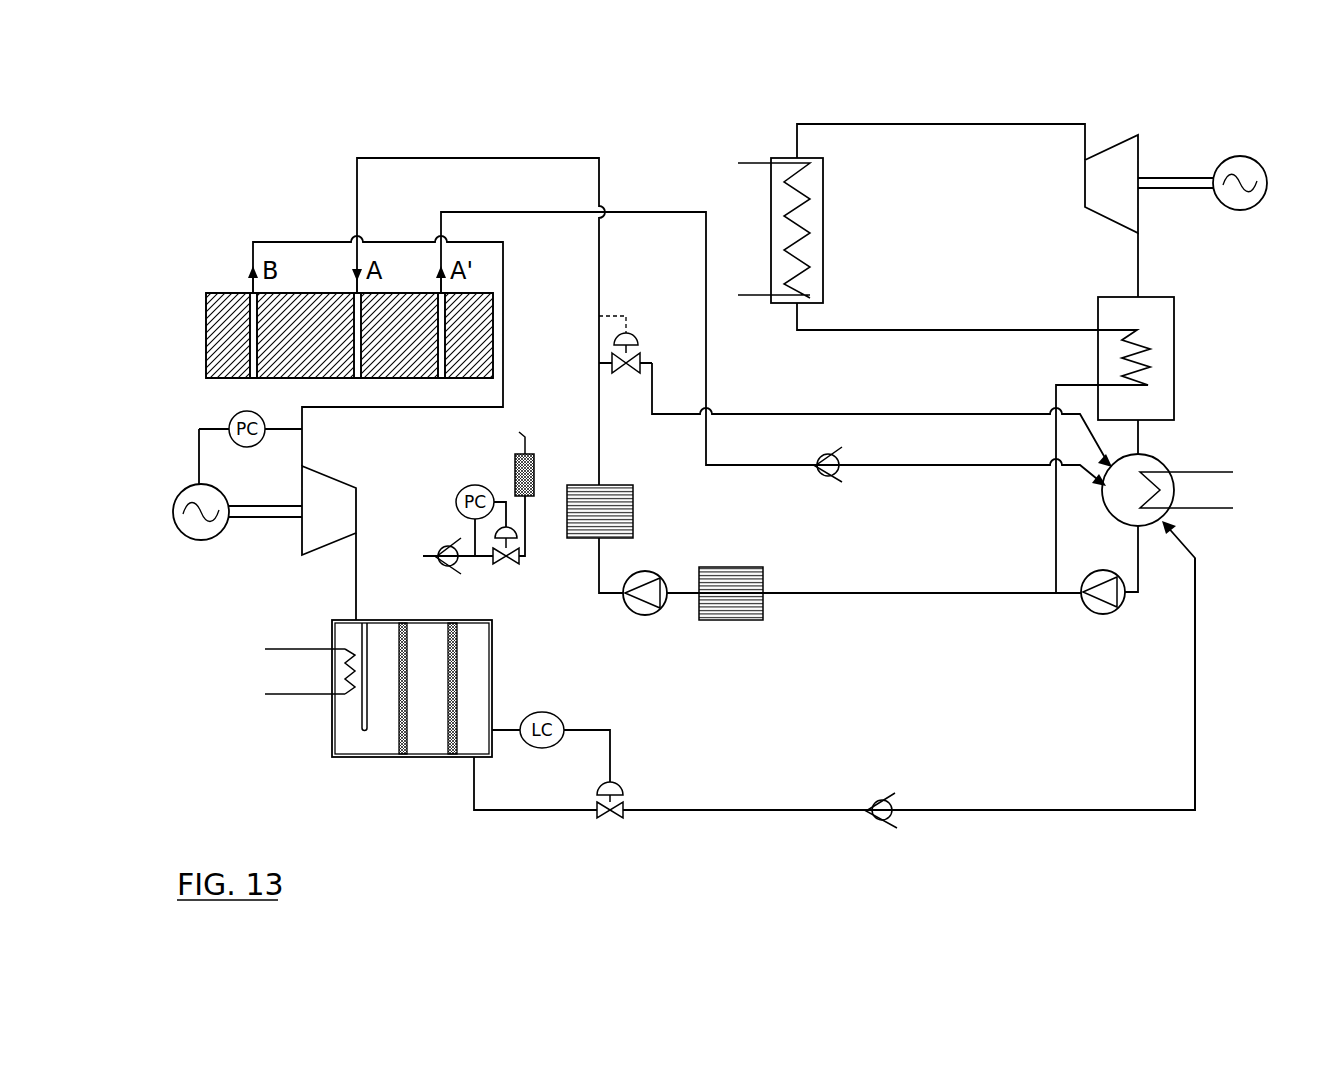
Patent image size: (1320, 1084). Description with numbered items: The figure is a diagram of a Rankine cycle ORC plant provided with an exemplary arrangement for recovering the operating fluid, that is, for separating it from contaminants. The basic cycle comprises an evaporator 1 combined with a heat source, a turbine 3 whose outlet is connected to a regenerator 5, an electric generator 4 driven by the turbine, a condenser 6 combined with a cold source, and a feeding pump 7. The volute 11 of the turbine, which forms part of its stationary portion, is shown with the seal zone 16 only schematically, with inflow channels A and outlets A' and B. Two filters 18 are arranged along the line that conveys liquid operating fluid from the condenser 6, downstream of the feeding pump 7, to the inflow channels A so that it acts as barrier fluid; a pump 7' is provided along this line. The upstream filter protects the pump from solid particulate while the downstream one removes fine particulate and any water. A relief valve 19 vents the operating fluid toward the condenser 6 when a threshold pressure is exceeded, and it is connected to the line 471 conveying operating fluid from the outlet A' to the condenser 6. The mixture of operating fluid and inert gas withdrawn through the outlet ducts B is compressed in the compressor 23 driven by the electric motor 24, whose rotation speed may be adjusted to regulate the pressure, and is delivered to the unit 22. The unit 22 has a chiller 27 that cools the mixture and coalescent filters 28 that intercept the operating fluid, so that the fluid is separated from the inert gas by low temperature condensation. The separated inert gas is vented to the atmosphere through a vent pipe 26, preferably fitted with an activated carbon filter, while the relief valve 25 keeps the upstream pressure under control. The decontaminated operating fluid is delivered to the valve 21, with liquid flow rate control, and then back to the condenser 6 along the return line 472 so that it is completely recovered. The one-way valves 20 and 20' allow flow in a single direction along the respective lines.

The evaporator 1 is at (775, 158).
The turbine 3 is at (1111, 184).
The electric generator 4 is at (1228, 200).
The regenerator 5 is at (1160, 307).
The condenser 6 is at (1155, 465).
The feeding pump 7 is at (1103, 623).
The pump 7' is at (645, 621).
The volute 11 is at (217, 350).
The seal zone 16 is at (269, 199).
The filters 18 is at (750, 572).
The relief valve 19 is at (615, 375).
The one-way valve 20 is at (846, 677).
The one-way valve 20' is at (427, 518).
The valve 21 is at (605, 820).
The unit 22 is at (373, 757).
The compressor 23 is at (329, 510).
The electric motor 24 is at (205, 532).
The relief valve 25 is at (507, 566).
The vent pipe 26 is at (533, 468).
The chiller 27 is at (281, 690).
The coalescent filters 28 is at (447, 733).
The line 471 is at (958, 478).
The return line 472 is at (1067, 812).